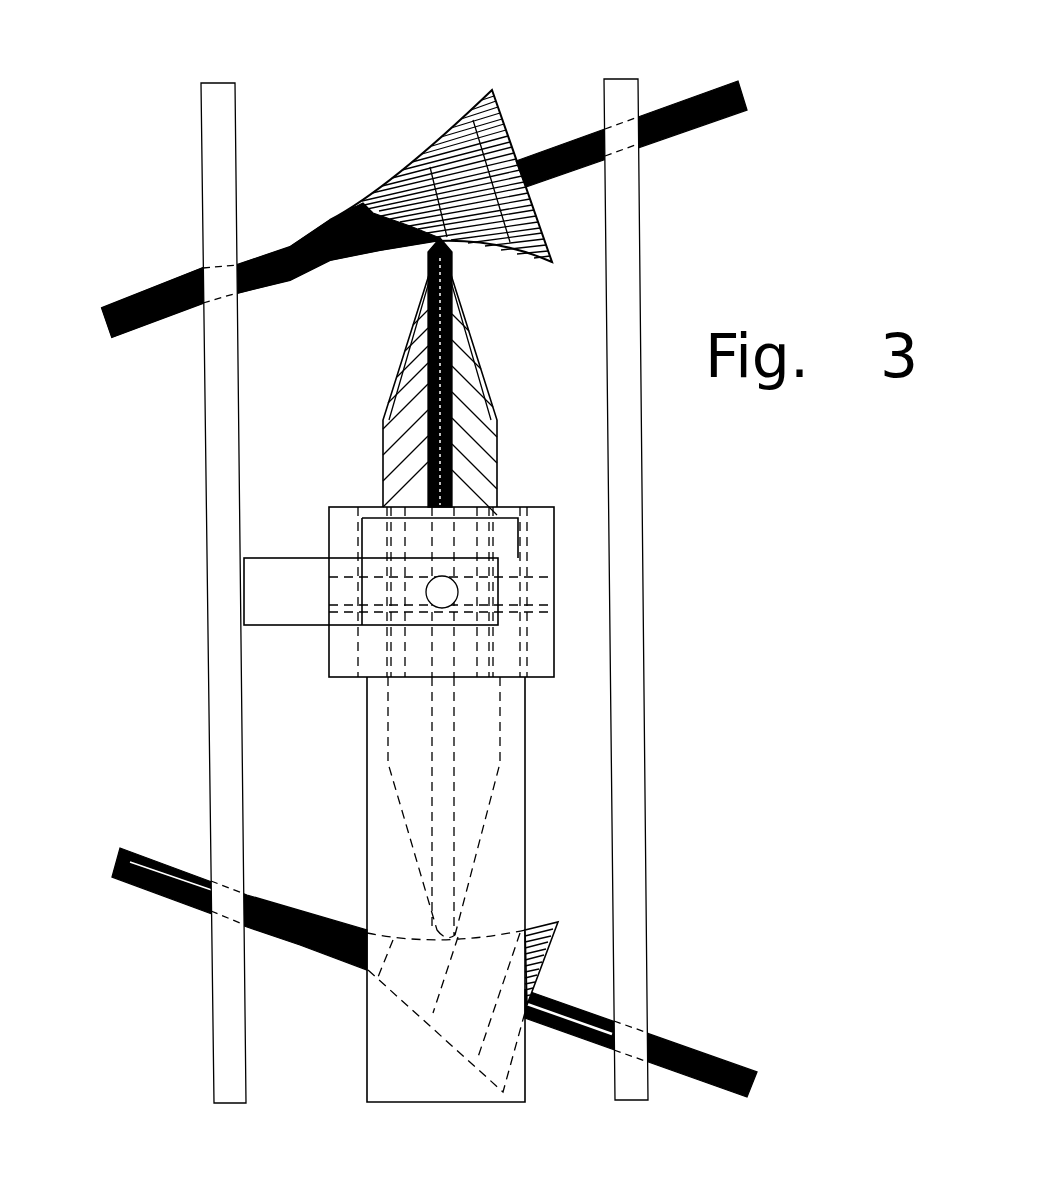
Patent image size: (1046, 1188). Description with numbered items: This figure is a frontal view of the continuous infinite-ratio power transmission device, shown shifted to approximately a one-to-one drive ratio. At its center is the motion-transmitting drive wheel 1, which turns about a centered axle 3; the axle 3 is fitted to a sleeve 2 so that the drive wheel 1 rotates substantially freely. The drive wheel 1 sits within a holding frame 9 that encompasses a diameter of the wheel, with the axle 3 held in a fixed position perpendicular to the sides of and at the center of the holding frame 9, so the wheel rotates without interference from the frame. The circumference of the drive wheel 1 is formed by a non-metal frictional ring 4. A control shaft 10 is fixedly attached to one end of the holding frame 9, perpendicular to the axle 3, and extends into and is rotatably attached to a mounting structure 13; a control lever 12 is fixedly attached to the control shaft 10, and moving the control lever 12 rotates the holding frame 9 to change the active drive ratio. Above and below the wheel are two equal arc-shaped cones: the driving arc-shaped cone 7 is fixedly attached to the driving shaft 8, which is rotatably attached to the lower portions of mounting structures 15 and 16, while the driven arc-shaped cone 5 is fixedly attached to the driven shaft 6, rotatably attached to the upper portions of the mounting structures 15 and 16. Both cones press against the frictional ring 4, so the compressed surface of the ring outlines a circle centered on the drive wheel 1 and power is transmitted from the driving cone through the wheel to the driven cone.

The drive wheel 1 is at (473, 357).
The sleeve 2 is at (507, 572).
The axle 3 is at (549, 588).
The frictional ring 4 is at (452, 425).
The driven arc-shaped cone 5 is at (470, 117).
The driven shaft 6 is at (565, 142).
The driving arc-shaped cone 7 is at (541, 922).
The driving shaft 8 is at (712, 1050).
The holding frame 9 is at (345, 507).
The control shaft 10 is at (447, 592).
The control lever 12 is at (262, 562).
The mounting structure 13 is at (373, 850).
The mounting structure 15 is at (207, 136).
The mounting structure 16 is at (635, 220).